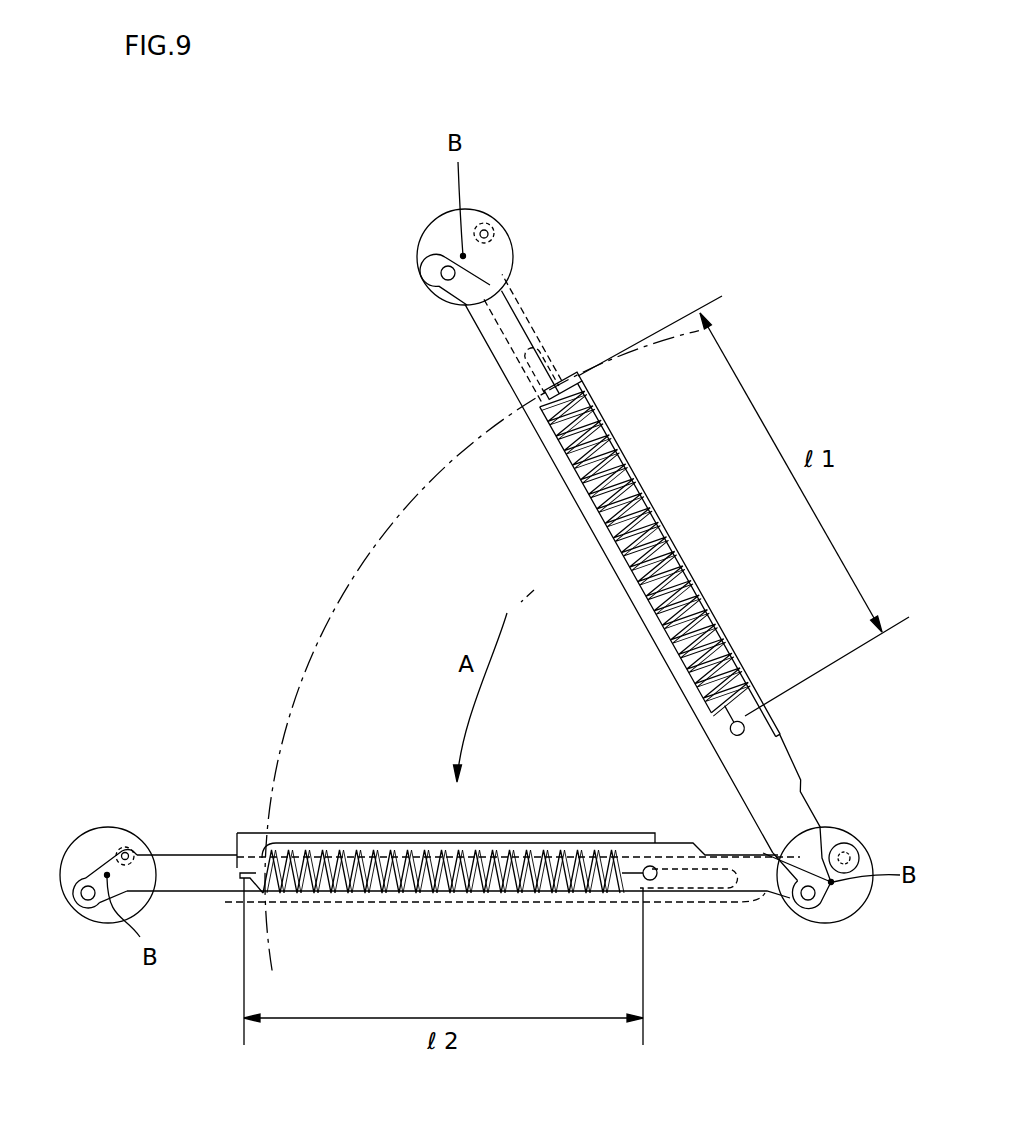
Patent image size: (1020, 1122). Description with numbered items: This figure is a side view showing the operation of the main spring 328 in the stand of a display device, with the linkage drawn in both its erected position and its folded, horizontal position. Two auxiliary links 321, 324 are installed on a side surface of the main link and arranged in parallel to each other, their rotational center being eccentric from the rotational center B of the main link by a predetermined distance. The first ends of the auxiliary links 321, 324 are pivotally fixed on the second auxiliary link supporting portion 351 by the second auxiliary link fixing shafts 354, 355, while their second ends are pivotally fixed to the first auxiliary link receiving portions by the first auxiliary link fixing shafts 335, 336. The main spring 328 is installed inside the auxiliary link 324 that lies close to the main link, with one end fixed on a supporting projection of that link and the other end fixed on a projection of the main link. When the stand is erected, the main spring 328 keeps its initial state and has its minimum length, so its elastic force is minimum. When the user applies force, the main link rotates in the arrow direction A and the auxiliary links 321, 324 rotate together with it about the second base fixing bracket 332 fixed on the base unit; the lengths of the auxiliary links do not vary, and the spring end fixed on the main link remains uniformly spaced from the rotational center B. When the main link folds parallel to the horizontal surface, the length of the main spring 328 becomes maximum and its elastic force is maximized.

The auxiliary link 321 is at (547, 335).
The auxiliary link 324 is at (483, 337).
The main spring 328 is at (610, 547).
The second base fixing bracket 332 is at (860, 907).
The first auxiliary link fixing shaft 335 is at (862, 836).
The first auxiliary link fixing shaft 336 is at (807, 901).
The second auxiliary link supporting portion 351 is at (83, 847).
The second auxiliary link fixing shaft 354 is at (123, 838).
The second auxiliary link fixing shaft 355 is at (90, 905).